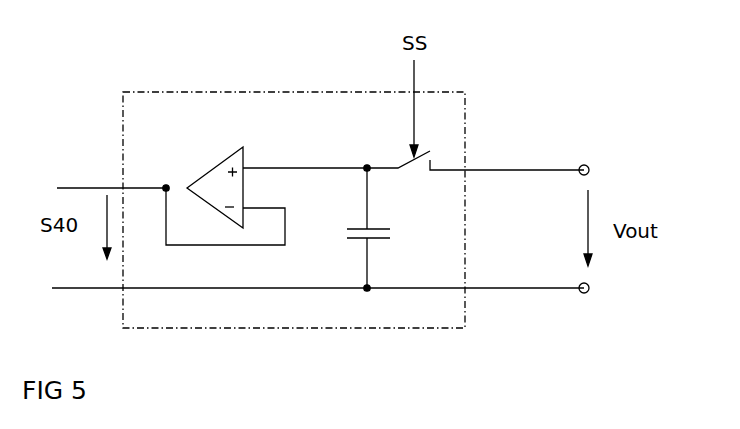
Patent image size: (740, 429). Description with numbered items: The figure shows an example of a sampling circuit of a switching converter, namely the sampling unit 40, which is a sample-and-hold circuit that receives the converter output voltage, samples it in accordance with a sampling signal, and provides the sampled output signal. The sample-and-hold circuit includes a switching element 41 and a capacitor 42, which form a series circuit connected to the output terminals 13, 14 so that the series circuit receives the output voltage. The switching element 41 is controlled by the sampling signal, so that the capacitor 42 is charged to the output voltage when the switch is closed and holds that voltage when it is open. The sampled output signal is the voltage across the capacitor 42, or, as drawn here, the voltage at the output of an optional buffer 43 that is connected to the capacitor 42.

The sampling unit 40 is at (280, 92).
The switching element 41 is at (413, 173).
The capacitor 42 is at (352, 220).
The buffer 43 is at (213, 164).
The output terminal 13 is at (588, 165).
The output terminal 14 is at (586, 294).